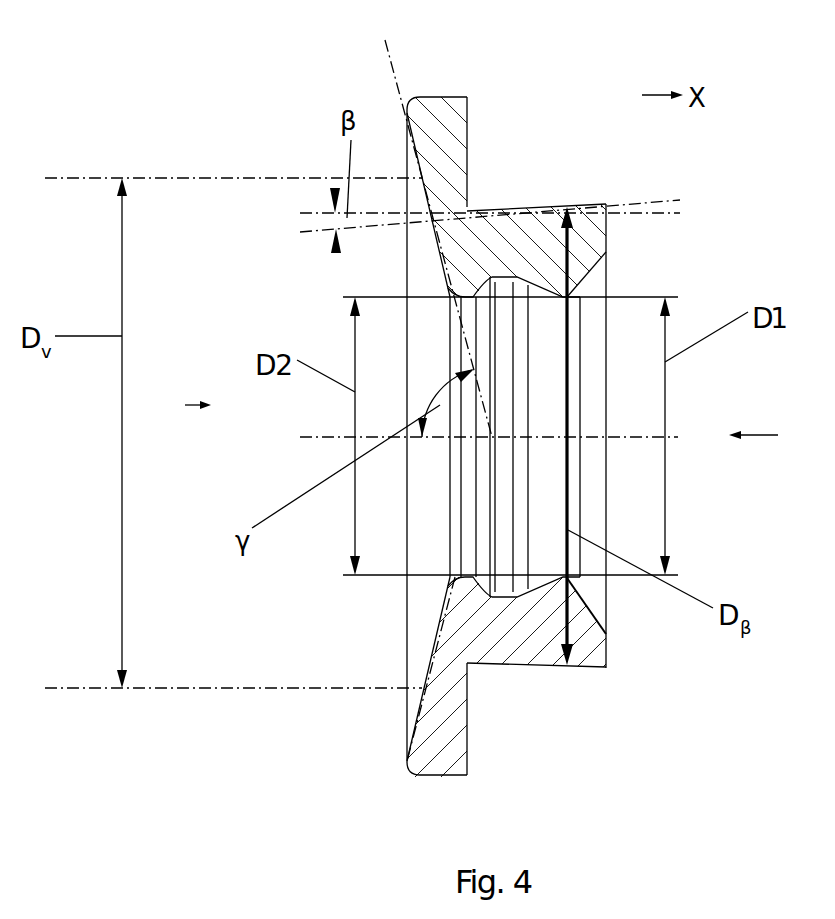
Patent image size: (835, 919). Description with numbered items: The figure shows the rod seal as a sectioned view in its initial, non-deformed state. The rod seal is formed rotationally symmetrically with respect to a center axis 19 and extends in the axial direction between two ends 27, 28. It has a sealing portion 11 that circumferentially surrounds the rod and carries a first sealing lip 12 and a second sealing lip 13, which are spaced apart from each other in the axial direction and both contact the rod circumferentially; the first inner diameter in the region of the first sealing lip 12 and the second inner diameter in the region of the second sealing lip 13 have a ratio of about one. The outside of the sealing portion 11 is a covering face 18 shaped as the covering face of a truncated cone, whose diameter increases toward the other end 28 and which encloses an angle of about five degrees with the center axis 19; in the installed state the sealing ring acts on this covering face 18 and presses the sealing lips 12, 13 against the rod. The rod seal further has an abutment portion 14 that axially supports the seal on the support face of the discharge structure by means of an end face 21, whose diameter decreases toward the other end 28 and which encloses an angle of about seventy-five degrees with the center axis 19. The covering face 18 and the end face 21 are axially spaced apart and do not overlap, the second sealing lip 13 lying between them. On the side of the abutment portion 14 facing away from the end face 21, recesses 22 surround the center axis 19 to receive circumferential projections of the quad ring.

The sealing portion 11 is at (530, 625).
The first sealing lip 12 is at (596, 622).
The second sealing lip 13 is at (463, 578).
The abutment portion 14 is at (441, 727).
The covering face 18 is at (555, 195).
The center axis 19 is at (630, 437).
The end face 21 is at (428, 242).
The recesses 22 is at (474, 689).
The end 27 is at (179, 410).
The other end 28 is at (773, 440).